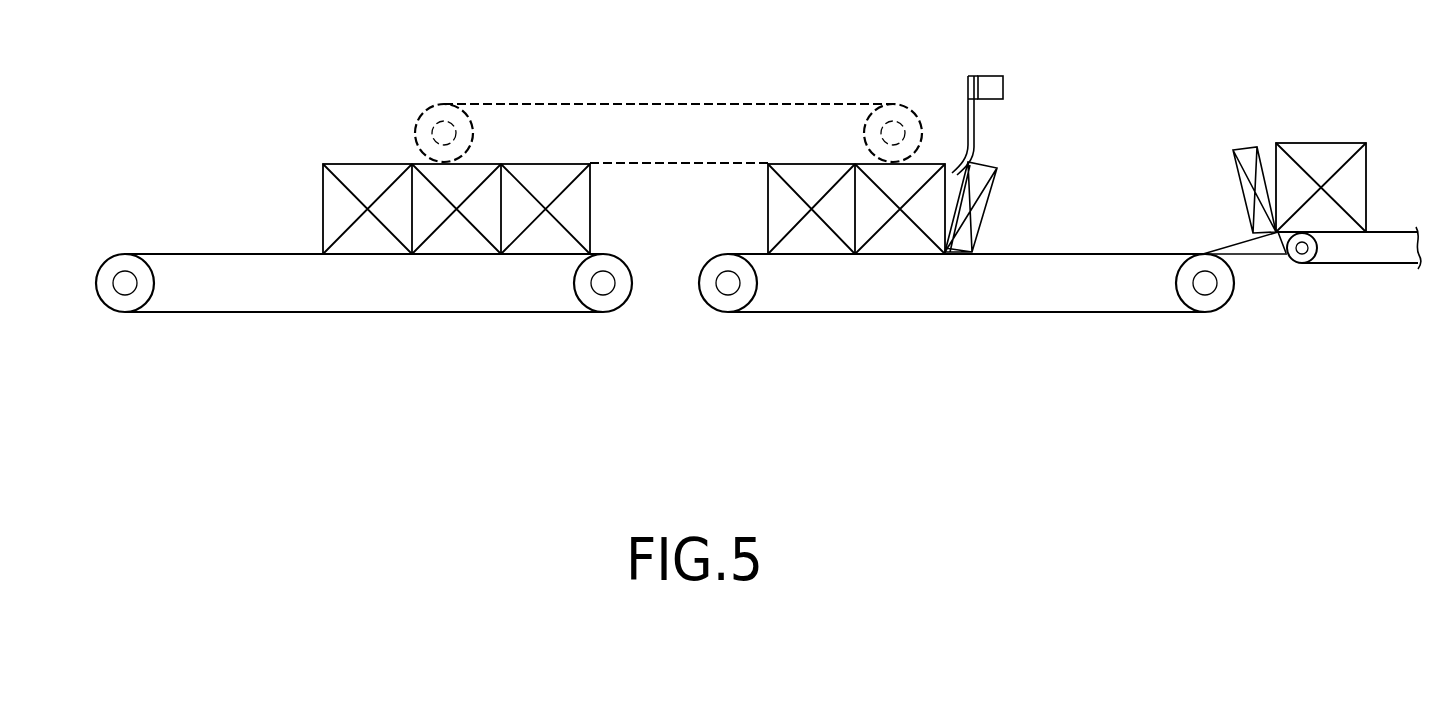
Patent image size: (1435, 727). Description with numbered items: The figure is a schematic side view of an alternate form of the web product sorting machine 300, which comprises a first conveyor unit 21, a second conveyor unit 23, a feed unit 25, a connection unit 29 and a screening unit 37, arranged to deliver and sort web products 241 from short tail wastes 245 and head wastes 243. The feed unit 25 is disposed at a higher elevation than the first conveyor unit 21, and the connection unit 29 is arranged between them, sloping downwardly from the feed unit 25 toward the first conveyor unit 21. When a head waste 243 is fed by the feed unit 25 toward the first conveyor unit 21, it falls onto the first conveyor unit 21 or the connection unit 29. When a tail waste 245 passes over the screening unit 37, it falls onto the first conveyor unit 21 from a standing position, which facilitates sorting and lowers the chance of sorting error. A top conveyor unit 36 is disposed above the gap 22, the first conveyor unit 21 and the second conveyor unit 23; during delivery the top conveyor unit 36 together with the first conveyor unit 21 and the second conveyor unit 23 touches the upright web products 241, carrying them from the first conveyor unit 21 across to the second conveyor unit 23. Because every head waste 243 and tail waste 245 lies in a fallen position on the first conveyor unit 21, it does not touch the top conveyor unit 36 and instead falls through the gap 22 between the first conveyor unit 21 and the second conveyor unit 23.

The web product sorting machine 300 is at (268, 94).
The second conveyor unit 23 is at (252, 232).
The gap 22 is at (665, 252).
The first conveyor unit 21 is at (1074, 238).
The web products 241 is at (778, 229).
The tail waste 245 is at (997, 168).
The screening unit 37 is at (988, 67).
The top conveyor unit 36 is at (655, 100).
The connection unit 29 is at (1250, 256).
The feed unit 25 is at (1370, 263).
The head waste 243 is at (1247, 150).